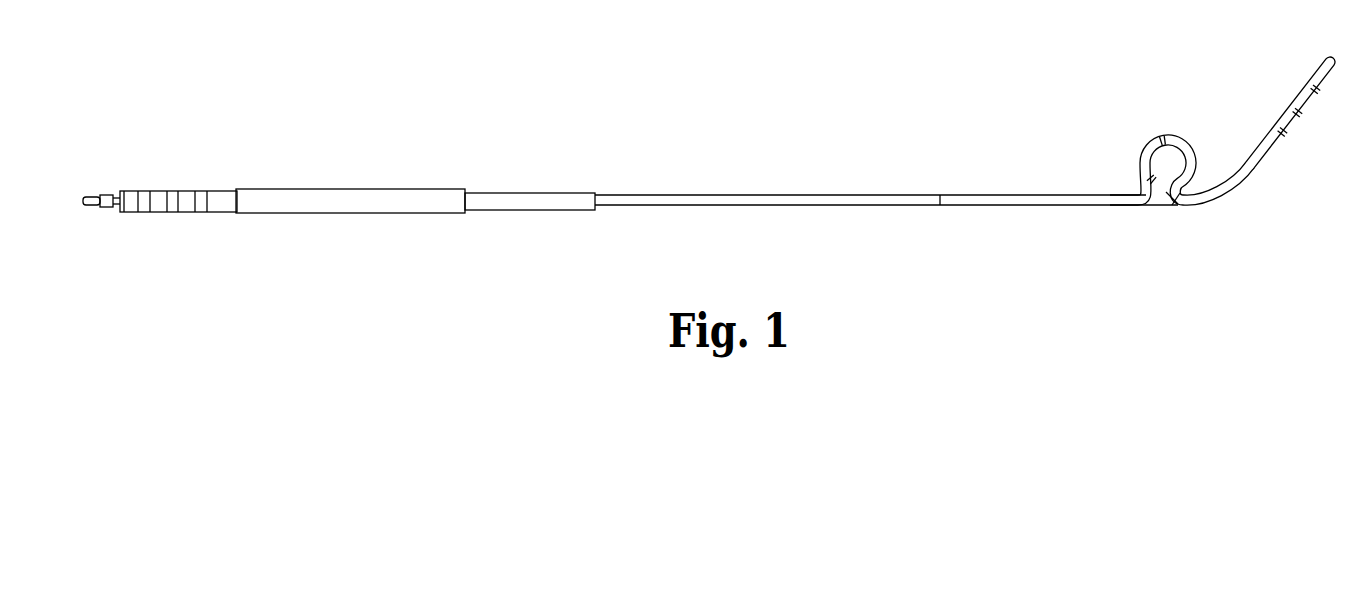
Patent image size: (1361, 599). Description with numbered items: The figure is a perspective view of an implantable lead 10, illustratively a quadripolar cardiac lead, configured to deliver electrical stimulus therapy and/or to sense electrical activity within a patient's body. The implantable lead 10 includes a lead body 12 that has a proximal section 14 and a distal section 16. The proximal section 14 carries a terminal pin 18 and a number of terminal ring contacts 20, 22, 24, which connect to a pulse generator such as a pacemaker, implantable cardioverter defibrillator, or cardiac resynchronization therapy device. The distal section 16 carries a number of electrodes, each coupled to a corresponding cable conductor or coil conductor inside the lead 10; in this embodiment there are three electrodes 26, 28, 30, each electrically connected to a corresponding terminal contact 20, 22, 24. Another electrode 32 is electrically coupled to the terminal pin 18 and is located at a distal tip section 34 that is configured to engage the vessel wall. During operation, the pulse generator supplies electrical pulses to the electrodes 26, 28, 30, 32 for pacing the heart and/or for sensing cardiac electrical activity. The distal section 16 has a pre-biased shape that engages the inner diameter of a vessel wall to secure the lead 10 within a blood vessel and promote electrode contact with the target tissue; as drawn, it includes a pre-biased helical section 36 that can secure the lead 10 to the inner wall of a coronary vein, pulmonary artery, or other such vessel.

The implantable lead 10 is at (856, 108).
The lead body 12 is at (705, 207).
The proximal section 14 is at (336, 230).
The distal section 16 is at (1229, 234).
The terminal pin 18 is at (86, 208).
The terminal ring contact 20 is at (141, 207).
The terminal ring contact 22 is at (169, 210).
The terminal ring contact 24 is at (204, 210).
The electrode 26 is at (1175, 203).
The electrode 28 is at (1159, 140).
The electrode 30 is at (1147, 181).
The electrode 32 is at (1294, 106).
The distal tip section 34 is at (1327, 60).
The pre-biased helical section 36 is at (1171, 118).